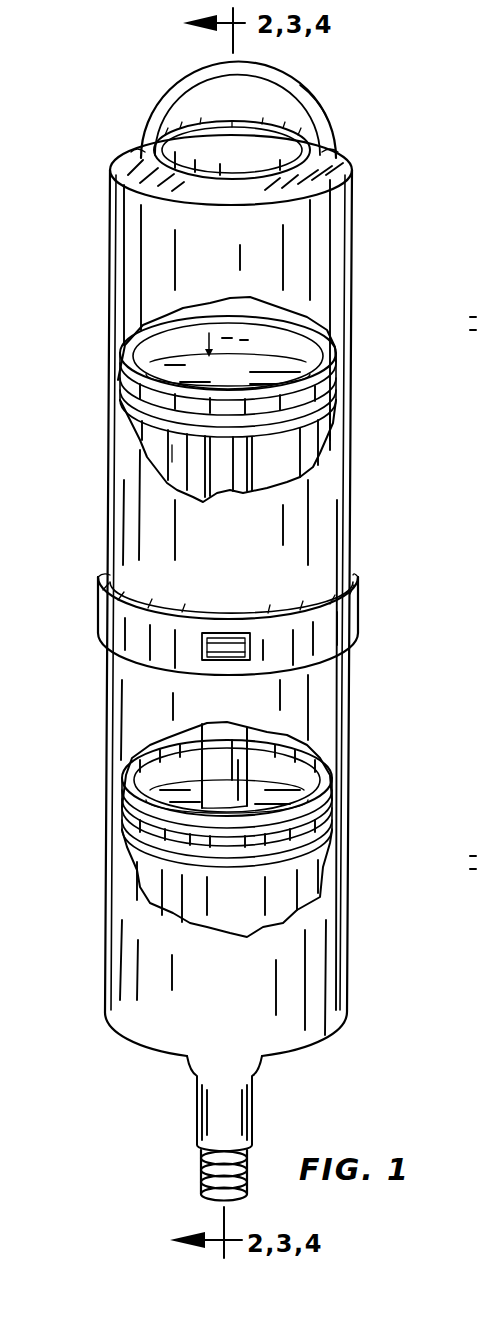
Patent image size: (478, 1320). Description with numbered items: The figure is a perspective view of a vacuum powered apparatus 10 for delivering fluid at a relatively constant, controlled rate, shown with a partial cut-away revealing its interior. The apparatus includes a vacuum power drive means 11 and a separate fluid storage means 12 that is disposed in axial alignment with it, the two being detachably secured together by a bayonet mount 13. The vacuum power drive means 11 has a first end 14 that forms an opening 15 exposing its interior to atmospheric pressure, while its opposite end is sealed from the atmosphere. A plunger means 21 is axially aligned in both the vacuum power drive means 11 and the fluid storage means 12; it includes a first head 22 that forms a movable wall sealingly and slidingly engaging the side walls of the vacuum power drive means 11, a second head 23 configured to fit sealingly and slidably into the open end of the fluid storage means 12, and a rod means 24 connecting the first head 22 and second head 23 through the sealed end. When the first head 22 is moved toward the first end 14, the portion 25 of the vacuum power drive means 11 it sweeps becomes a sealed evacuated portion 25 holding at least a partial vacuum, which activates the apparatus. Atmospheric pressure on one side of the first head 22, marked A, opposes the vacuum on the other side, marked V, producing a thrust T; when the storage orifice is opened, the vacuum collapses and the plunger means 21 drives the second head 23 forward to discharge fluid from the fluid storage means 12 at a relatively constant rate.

The vacuum powered apparatus 10 is at (376, 238).
The vacuum power drive means 11 is at (355, 184).
The fluid storage means 12 is at (350, 758).
The bayonet mount 13 is at (360, 617).
The first end 14 is at (119, 152).
The opening 15 is at (223, 127).
The plunger means 21 is at (308, 453).
The first head 22 is at (333, 383).
The second head 23 is at (303, 817).
The rod means 24 is at (323, 463).
The sealed evacuated portion 25 is at (177, 452).